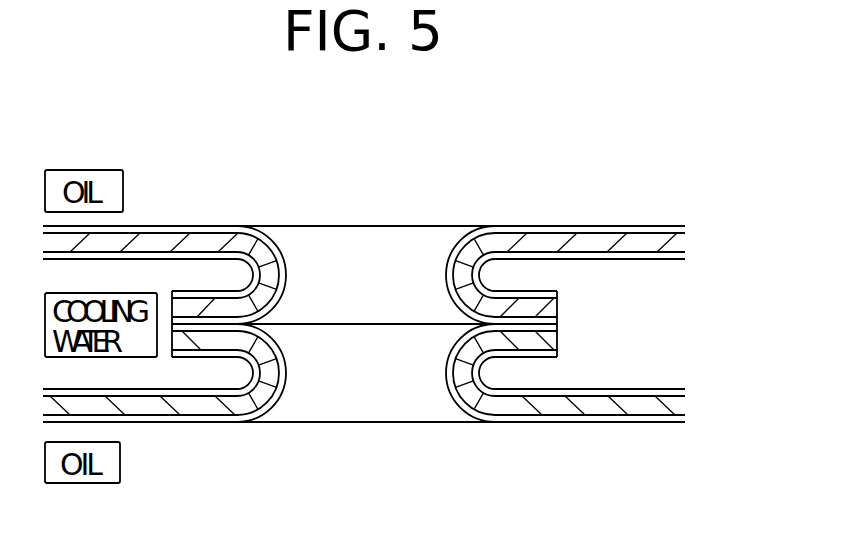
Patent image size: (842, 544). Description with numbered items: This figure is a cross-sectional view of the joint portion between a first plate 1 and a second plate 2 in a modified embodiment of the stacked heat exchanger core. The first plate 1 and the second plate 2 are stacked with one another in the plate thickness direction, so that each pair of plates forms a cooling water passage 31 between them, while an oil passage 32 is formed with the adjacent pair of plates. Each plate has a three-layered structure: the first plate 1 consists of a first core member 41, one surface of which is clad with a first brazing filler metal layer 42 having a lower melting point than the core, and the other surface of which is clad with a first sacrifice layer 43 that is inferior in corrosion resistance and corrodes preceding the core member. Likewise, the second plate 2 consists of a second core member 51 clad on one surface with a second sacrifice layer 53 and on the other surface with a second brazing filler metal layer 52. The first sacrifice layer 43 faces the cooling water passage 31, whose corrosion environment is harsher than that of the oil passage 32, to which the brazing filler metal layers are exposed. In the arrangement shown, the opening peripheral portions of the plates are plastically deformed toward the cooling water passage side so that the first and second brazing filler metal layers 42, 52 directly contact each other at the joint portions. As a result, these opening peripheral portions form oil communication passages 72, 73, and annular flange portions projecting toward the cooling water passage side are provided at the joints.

The first plate 1 is at (590, 244).
The second plate 2 is at (590, 414).
The cooling water passage 31 is at (612, 340).
The oil passage 32 is at (512, 210).
The first core member 41 is at (603, 240).
The first brazing filler metal layer 42 is at (544, 226).
The first sacrifice layer 43 is at (643, 259).
The second core member 51 is at (610, 405).
The second brazing filler metal layer 52 is at (548, 418).
The second sacrifice layer 53 is at (640, 389).
The oil communication passage 72 is at (353, 260).
The oil communication passage 73 is at (358, 390).